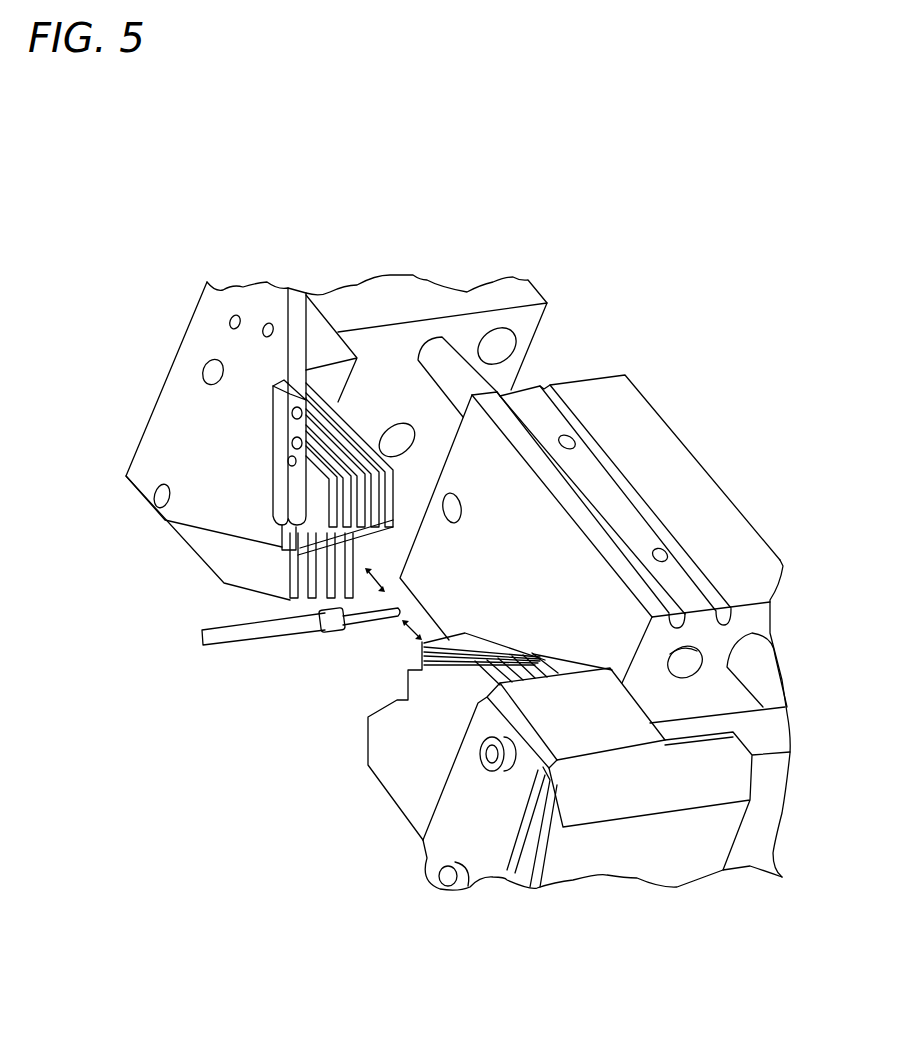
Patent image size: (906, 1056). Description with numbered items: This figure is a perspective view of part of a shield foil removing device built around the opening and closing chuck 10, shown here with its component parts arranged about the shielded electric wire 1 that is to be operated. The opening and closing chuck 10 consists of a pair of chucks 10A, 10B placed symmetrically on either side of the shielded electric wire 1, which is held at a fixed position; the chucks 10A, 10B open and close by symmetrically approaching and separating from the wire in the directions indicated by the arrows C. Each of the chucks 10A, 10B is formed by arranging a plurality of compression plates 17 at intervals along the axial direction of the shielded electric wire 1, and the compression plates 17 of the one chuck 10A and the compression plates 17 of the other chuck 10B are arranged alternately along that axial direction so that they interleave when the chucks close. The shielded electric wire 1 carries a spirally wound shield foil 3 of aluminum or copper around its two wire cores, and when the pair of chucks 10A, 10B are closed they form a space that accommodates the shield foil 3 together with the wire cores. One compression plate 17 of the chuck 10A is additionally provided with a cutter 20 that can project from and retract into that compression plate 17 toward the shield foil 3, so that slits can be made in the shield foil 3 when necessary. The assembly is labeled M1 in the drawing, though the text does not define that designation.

The connector module M1 is at (302, 253).
The opening and closing chuck 10 is at (458, 535).
The chuck 10A is at (348, 470).
The chuck 10B is at (420, 760).
The compression plate 17 is at (400, 490).
The cutter 20 is at (285, 533).
The shielded electric wire 1 is at (322, 641).
The shield foil 3 is at (372, 622).
The arrows C is at (393, 603).